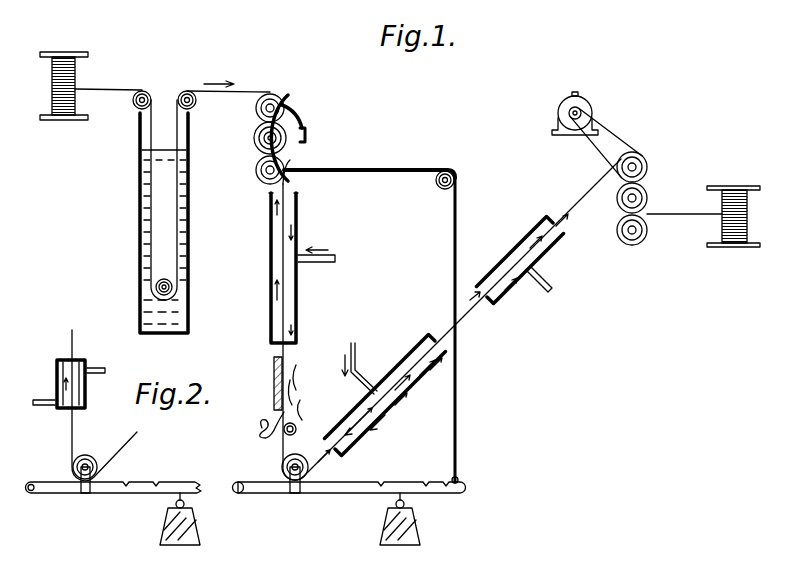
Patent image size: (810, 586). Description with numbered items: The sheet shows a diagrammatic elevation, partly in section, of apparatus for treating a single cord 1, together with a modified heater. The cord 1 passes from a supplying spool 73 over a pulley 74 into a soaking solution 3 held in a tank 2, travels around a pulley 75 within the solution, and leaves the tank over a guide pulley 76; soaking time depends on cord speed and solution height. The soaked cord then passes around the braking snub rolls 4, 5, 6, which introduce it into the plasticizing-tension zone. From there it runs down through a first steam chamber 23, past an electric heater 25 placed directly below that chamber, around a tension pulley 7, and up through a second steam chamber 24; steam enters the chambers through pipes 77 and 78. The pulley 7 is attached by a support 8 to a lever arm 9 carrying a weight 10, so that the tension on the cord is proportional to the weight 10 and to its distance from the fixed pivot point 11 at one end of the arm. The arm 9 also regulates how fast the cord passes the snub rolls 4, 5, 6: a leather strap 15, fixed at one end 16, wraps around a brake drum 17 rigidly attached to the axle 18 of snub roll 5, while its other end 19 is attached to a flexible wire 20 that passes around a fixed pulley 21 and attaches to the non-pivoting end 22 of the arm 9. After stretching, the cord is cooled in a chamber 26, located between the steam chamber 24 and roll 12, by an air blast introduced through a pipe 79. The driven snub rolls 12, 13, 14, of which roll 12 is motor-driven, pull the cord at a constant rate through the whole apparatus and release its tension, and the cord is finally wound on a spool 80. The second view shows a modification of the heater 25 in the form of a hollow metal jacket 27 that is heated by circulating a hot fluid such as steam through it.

In FIG. 1, the cord 1 is at (592, 178).
In FIG. 1, the tank 2 is at (138, 262).
In FIG. 1, the soaking solution 3 is at (168, 186).
In FIG. 1, the snub roll 4 is at (256, 104).
In FIG. 1, the snub roll 5 is at (280, 136).
In FIG. 1, the snub roll 6 is at (258, 177).
In FIG. 1, the pulley 7 is at (298, 456).
In FIG. 1, the support 8 is at (318, 464).
In FIG. 1, the lever arm 9 is at (398, 481).
In FIG. 1, the weight 10 is at (416, 522).
In FIG. 1, the fixed pivot point 11 is at (236, 481).
In FIG. 1, the snub roll 12 is at (620, 180).
In FIG. 1, the snub roll 13 is at (648, 199).
In FIG. 1, the snub roll 14 is at (648, 231).
In FIG. 1, the leather strap 15 is at (303, 124).
In FIG. 1, the fixed end of strap 16 is at (306, 140).
In FIG. 1, the brake drum 17 is at (104, 89).
In FIG. 1, the axle 18 is at (288, 112).
In FIG. 1, the other end of strap 19 is at (328, 168).
In FIG. 1, the flexible wire 20 is at (428, 167).
In FIG. 1, the fixed pulley 21 is at (438, 187).
In FIG. 1, the non-pivoting end of arm 22 is at (460, 481).
In FIG. 1, the steam chamber 23 is at (298, 220).
In FIG. 1, the steam chamber 24 is at (420, 347).
In FIG. 1, the electric heater 25 is at (273, 395).
In FIG. 1, the cooling chamber 26 is at (545, 221).
In FIG. 2, the hollow metal jacket 27 is at (84, 360).
In FIG. 1, the supplying spool 73 is at (62, 58).
In FIG. 1, the pulley 74 is at (133, 104).
In FIG. 1, the pulley 75 is at (161, 279).
In FIG. 1, the guide pulley 76 is at (196, 101).
In FIG. 1, the pipe 77 is at (336, 259).
In FIG. 1, the pipe 78 is at (351, 352).
In FIG. 1, the pipe 79 is at (547, 293).
In FIG. 1, the spool 80 is at (733, 186).